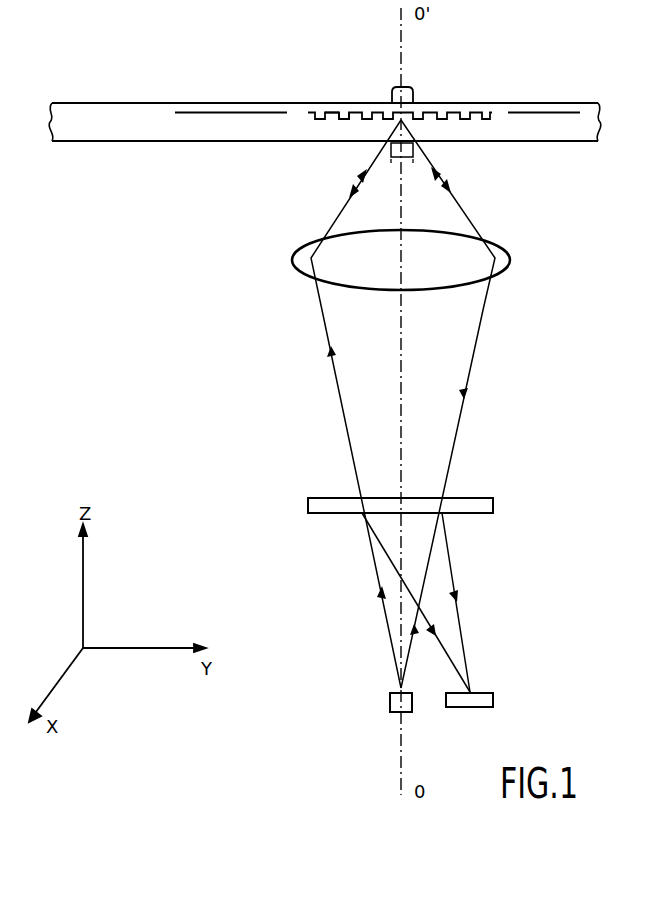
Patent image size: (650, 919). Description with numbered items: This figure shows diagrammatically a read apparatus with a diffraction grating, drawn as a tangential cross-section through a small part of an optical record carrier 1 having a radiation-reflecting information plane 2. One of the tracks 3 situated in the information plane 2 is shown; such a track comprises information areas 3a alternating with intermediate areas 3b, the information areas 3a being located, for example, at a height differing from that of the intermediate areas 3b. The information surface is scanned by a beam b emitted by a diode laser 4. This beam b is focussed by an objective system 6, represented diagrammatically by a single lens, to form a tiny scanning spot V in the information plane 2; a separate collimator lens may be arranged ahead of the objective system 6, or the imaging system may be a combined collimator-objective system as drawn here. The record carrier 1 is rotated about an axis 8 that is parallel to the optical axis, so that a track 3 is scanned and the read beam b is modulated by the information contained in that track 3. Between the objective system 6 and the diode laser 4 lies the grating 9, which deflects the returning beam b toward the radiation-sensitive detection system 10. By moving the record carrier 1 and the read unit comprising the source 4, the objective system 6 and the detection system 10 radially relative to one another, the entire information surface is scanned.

The optical record carrier 1 is at (553, 91).
The information plane 2 is at (572, 113).
The track 3 is at (434, 105).
The information areas 3a is at (322, 108).
The intermediate areas 3b is at (336, 110).
The diode laser 4 is at (390, 702).
The objective system 6 is at (501, 265).
The axis 8 is at (410, 100).
The grating 9 is at (493, 507).
The detection system 10 is at (493, 702).
The scanning spot V is at (392, 114).
The beam b is at (408, 613).